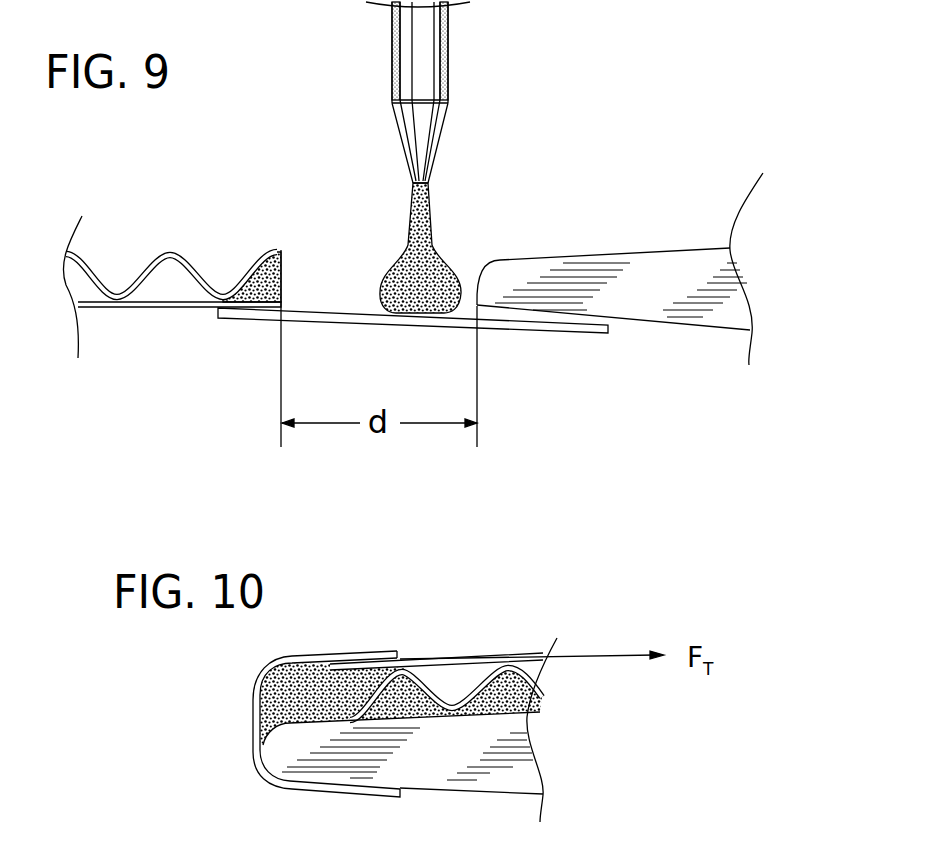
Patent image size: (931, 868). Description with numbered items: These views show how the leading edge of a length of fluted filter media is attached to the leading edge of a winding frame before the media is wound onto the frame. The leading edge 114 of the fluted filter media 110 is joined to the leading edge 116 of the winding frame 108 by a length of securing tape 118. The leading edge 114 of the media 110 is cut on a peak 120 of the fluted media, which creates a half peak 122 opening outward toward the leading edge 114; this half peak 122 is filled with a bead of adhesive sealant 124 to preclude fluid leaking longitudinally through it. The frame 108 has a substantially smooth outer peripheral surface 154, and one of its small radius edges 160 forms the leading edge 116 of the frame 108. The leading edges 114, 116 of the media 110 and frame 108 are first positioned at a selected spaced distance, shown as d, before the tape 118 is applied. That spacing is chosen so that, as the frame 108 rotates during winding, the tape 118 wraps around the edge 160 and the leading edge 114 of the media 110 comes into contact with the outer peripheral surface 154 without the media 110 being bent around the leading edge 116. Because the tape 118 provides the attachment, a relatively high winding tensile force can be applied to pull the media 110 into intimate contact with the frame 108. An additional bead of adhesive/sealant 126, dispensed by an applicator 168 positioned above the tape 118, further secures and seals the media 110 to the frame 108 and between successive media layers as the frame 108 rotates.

In FIG. 9, the winding frame 108 is at (680, 260).
In FIG. 10, the winding frame 108 is at (528, 750).
In FIG. 9, the fluted filter media 110 is at (158, 310).
In FIG. 10, the fluted filter media 110 is at (527, 653).
In FIG. 9, the leading edge of the filter media 114 is at (303, 254).
In FIG. 10, the leading edge of the filter media 114 is at (323, 652).
In FIG. 9, the leading edge of the winding frame 116 is at (509, 238).
In FIG. 10, the leading edge of the winding frame 116 is at (282, 757).
In FIG. 9, the securing tape 118 is at (338, 322).
In FIG. 10, the securing tape 118 is at (255, 703).
In FIG. 9, the peak of the fluted media 120 is at (280, 247).
In FIG. 9, the half peak 122 is at (306, 275).
In FIG. 9, the bead of adhesive sealant 124 is at (283, 291).
In FIG. 9, the additional bead of adhesive/sealant 126 is at (415, 313).
In FIG. 10, the additional bead of adhesive/sealant 126 is at (278, 670).
In FIG. 9, the outer peripheral surface 154 is at (603, 258).
In FIG. 10, the outer peripheral surface 154 is at (418, 790).
In FIG. 9, the small radius edge 160 is at (474, 310).
In FIG. 10, the small radius edge 160 is at (262, 735).
In FIG. 9, the applicator 168 is at (424, 40).